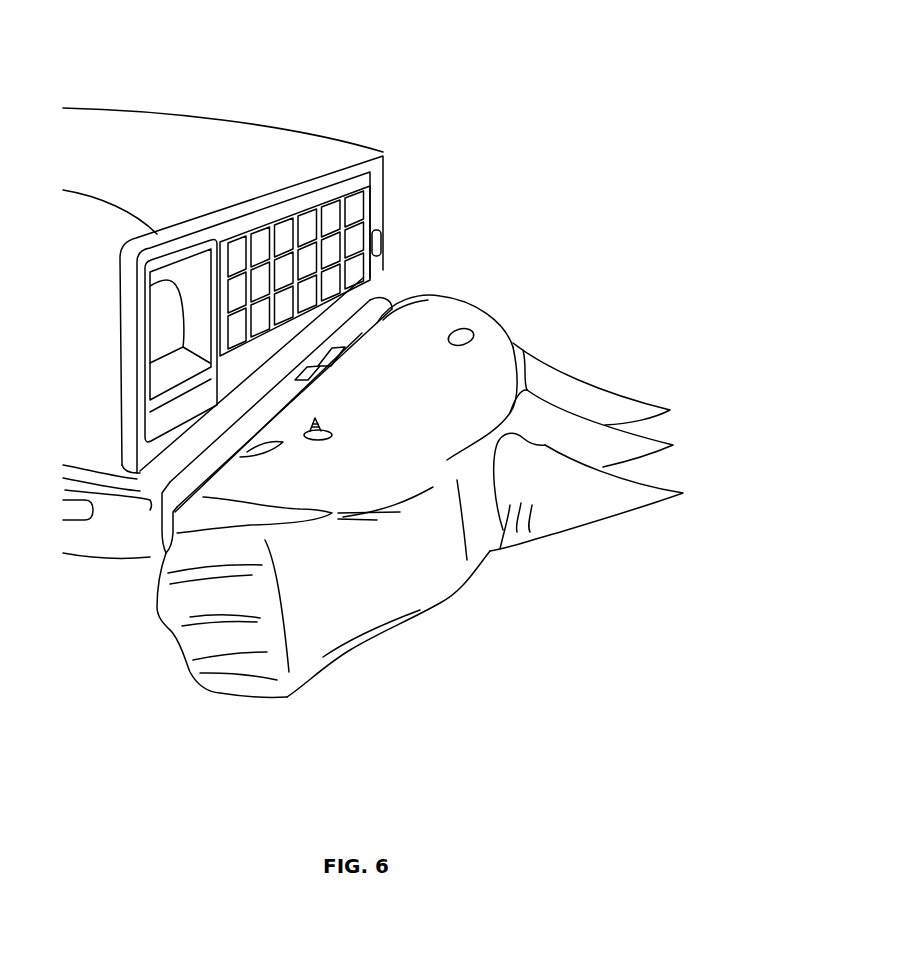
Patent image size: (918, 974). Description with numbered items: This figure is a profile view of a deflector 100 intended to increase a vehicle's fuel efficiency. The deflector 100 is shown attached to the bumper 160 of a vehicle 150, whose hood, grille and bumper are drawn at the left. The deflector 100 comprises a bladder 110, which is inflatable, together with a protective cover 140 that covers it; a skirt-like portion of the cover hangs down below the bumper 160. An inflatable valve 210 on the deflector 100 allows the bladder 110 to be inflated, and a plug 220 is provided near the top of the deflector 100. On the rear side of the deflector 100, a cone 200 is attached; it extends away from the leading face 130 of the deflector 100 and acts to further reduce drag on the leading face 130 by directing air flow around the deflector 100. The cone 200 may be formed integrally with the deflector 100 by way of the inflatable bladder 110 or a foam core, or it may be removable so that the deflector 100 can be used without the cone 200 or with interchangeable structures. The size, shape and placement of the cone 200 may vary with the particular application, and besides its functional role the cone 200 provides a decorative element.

The deflector 100 is at (423, 327).
The bladder 110 is at (227, 513).
The leading face 130 is at (513, 417).
The protective cover 140 is at (260, 597).
The vehicle 150 is at (257, 120).
The bumper 160 is at (350, 303).
The cone 200 is at (620, 492).
The inflatable valve 210 is at (332, 433).
The plug 220 is at (467, 333).